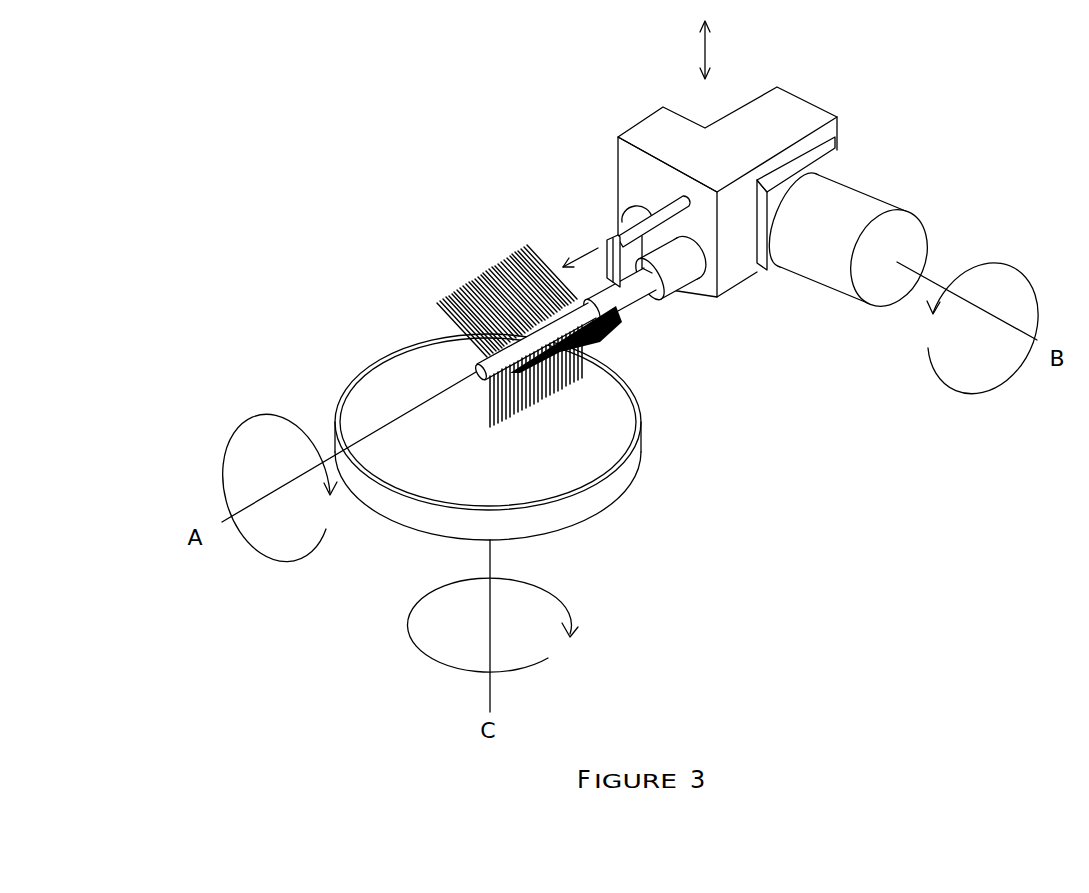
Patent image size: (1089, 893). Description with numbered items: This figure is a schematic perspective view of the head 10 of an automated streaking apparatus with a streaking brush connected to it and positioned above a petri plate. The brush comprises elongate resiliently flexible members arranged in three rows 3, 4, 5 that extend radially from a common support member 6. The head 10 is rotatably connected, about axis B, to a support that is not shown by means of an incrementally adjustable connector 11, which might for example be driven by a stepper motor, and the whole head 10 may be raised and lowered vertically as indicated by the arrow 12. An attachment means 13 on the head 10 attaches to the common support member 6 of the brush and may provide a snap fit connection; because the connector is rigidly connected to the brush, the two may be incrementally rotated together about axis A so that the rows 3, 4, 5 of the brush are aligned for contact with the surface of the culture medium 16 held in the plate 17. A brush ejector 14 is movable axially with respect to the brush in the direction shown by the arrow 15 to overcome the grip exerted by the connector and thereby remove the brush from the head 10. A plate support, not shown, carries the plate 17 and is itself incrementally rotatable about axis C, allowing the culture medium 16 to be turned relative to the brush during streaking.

The row of flexible members 3 is at (493, 267).
The row of flexible members 4 is at (620, 312).
The row of flexible members 5 is at (489, 415).
The common support member 6 is at (473, 367).
The head 10 is at (807, 100).
The incrementally adjustable connector 11 is at (873, 192).
The arrow 12 is at (705, 49).
The attachment means 13 is at (675, 268).
The brush ejector 14 is at (612, 238).
The arrow 15 is at (577, 252).
The culture medium 16 is at (588, 440).
The plate 17 is at (620, 493).